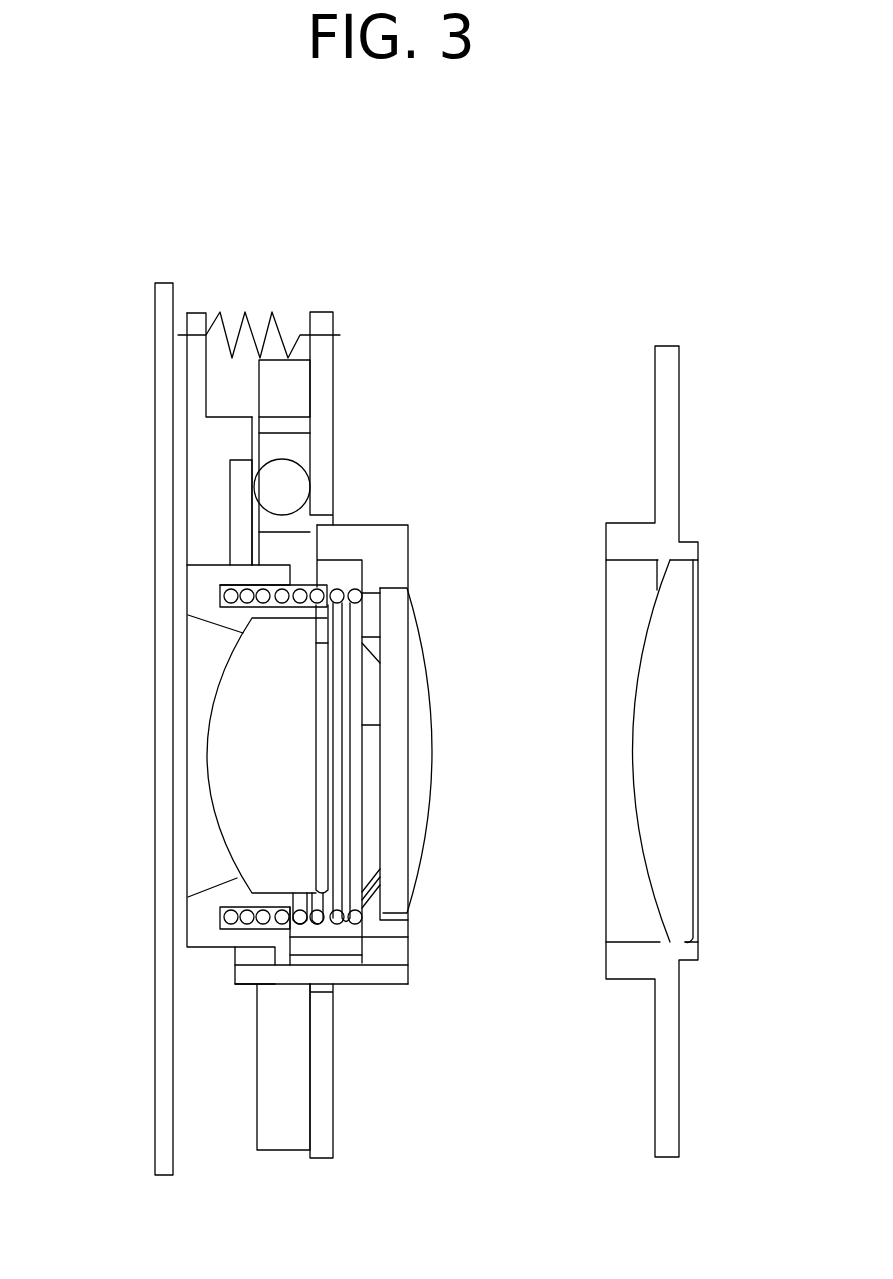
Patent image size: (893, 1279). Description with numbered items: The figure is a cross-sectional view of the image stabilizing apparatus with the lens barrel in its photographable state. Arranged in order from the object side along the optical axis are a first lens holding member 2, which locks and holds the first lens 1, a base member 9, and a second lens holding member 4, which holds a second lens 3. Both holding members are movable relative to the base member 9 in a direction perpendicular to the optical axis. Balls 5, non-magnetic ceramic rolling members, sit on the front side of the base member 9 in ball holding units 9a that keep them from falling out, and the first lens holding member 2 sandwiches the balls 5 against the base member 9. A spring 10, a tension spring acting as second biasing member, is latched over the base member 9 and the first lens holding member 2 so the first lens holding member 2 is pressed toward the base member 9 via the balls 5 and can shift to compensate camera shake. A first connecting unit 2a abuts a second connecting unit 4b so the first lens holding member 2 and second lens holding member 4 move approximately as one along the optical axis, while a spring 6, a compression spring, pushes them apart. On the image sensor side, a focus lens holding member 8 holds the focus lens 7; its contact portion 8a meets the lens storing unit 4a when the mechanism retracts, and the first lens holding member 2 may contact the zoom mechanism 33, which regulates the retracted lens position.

The first lens 1 is at (255, 738).
The first lens holding member 2 is at (207, 588).
The first connecting unit 2a is at (280, 985).
The second lens 3 is at (405, 653).
The second lens holding member 4 is at (380, 540).
The lens storing unit 4a is at (410, 968).
The second connecting unit 4b is at (260, 960).
The balls 5 is at (267, 487).
The spring 6 is at (300, 880).
The focus lens 7 is at (676, 788).
The focus lens holding member 8 is at (668, 1007).
The contact portion 8a is at (605, 965).
The base member 9 is at (287, 390).
The ball holding units 9a is at (287, 428).
The spring 10 is at (237, 330).
The zoom mechanism 33 is at (163, 503).